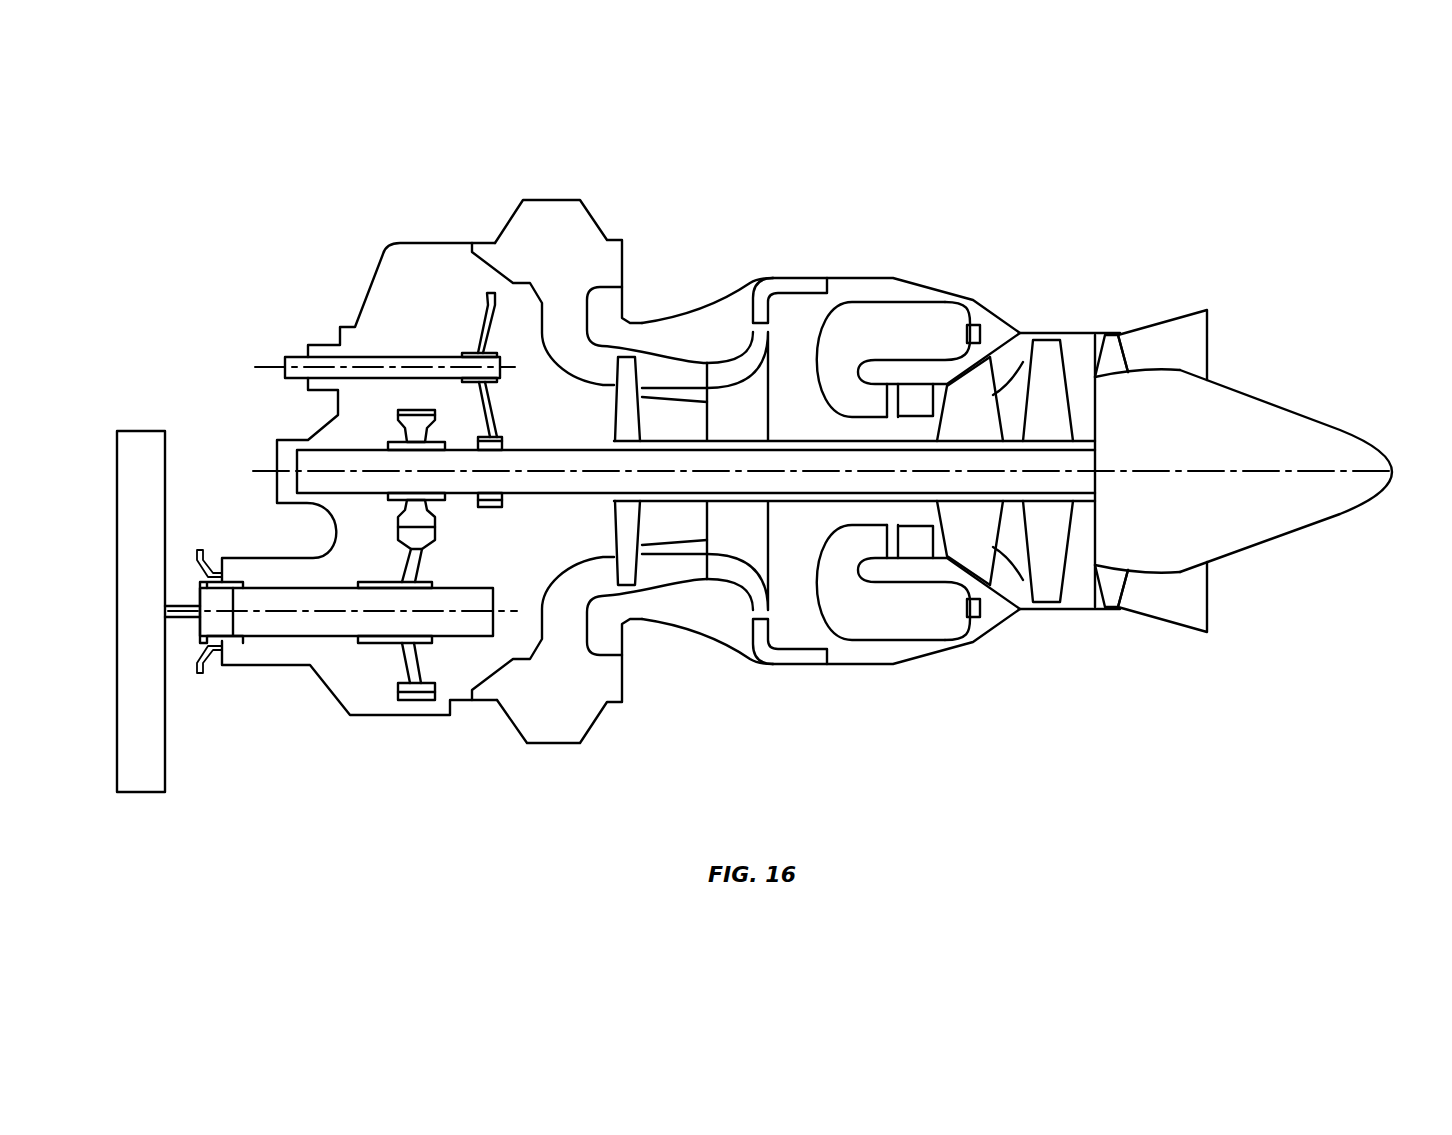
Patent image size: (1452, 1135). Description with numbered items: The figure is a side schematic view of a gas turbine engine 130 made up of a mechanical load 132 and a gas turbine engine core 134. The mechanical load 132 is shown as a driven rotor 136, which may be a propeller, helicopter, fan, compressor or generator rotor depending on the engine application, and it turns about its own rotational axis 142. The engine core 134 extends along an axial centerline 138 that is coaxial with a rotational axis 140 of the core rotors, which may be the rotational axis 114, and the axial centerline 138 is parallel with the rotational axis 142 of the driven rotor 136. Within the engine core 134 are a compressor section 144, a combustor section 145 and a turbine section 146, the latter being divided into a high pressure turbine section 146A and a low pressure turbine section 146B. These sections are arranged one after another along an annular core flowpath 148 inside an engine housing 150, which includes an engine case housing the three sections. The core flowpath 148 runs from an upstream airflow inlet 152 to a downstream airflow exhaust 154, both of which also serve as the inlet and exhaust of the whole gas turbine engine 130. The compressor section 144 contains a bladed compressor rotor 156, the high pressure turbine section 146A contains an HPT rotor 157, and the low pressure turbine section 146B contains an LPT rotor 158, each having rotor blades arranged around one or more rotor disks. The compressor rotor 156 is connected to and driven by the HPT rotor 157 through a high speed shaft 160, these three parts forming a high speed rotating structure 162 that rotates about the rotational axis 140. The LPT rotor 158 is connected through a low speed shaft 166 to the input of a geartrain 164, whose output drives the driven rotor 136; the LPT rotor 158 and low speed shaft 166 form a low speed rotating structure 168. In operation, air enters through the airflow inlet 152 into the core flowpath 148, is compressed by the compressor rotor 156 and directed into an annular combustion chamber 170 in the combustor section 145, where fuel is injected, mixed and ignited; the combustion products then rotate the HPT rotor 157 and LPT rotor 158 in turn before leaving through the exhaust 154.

The rotational axis 114 is at (1310, 473).
The gas turbine engine 130 is at (822, 321).
The mechanical load 132 is at (146, 385).
The gas turbine engine core 134 is at (723, 192).
The driven rotor 136 is at (116, 488).
The axial centerline 138 is at (1310, 473).
The rotational axis 140 is at (1340, 474).
The rotational axis 142 is at (290, 616).
The compressor section 144 is at (723, 328).
The combustor section 145 is at (879, 272).
The turbine section 146 is at (992, 260).
The high pressure turbine section 146A is at (999, 348).
The low pressure turbine section 146B is at (1069, 333).
The core flowpath 148 is at (545, 312).
The engine housing 150 is at (779, 262).
The airflow inlet 152 is at (577, 200).
The airflow exhaust 154 is at (1210, 345).
The compressor rotor 156 is at (615, 428).
The HPT rotor 157 is at (1027, 403).
The LPT rotor 158 is at (1073, 426).
The high speed shaft 160 is at (789, 440).
The high speed rotating structure 162 is at (803, 521).
The geartrain 164 is at (392, 718).
The low speed shaft 166 is at (827, 437).
The low speed rotating structure 168 is at (558, 514).
The combustion chamber 170 is at (885, 341).